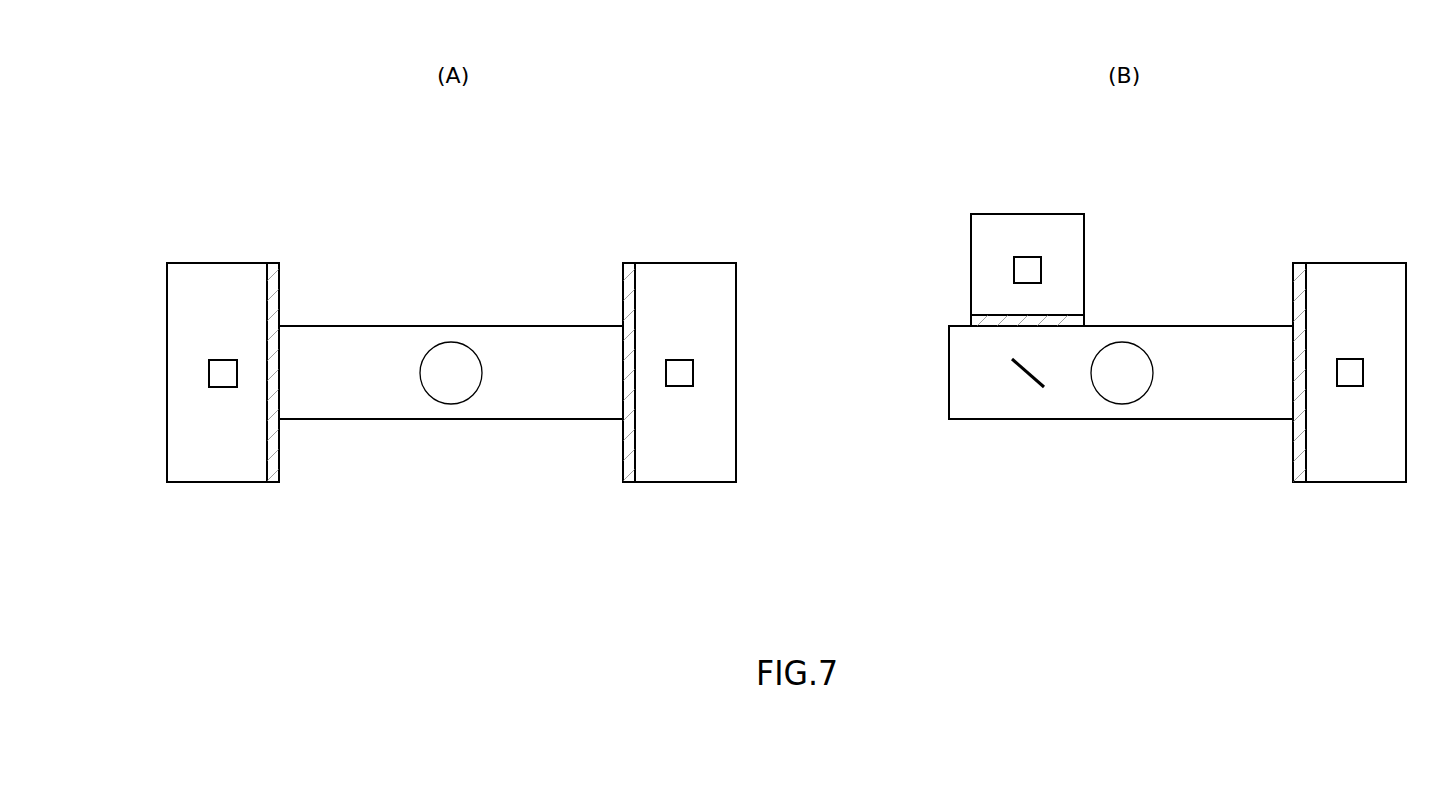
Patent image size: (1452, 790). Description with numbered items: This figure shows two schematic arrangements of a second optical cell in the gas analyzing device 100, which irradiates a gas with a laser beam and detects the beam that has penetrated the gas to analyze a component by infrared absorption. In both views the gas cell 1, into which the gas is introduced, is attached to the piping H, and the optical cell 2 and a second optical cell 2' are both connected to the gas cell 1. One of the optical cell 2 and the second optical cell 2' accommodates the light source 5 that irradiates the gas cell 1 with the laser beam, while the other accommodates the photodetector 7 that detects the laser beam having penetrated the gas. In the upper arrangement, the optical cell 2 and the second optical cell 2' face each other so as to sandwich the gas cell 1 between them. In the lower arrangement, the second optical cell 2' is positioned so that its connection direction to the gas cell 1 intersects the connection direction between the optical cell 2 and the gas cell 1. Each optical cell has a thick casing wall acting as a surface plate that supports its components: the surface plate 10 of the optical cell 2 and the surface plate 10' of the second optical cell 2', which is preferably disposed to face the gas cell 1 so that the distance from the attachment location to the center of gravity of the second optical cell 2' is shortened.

The gas analyzing device 100 is at (192, 209).
The gas cell 1 is at (360, 326).
The optical cell 2 is at (1014, 425).
The second optical cell 2' is at (670, 398).
The light source 5 is at (693, 372).
The photodetector 7 is at (209, 372).
The surface plate 10 is at (921, 382).
The surface plate of the second optical cell 10' is at (715, 381).
The piping H is at (451, 404).